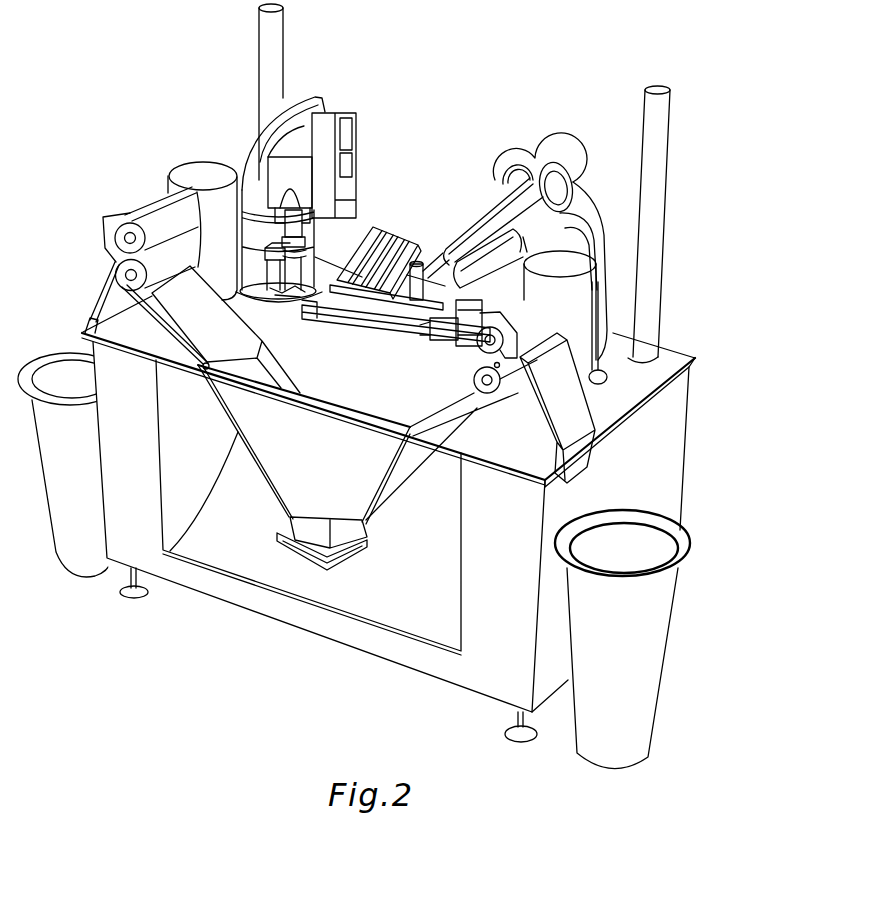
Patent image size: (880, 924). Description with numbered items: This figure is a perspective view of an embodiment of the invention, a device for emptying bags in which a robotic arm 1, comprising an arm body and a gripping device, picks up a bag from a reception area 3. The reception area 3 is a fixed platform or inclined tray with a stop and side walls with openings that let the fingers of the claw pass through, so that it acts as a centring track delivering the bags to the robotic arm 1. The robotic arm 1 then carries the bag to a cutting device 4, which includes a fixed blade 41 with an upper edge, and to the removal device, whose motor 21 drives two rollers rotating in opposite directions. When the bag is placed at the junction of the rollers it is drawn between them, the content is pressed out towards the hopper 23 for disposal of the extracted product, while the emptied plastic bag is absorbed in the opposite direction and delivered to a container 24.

The robotic arm 1 is at (560, 122).
The reception area 3 is at (444, 217).
The cutting device 4 is at (347, 352).
The fixed blade 41 is at (432, 338).
The motor 21 is at (583, 320).
The hopper 23 is at (318, 533).
The container 24 is at (682, 544).